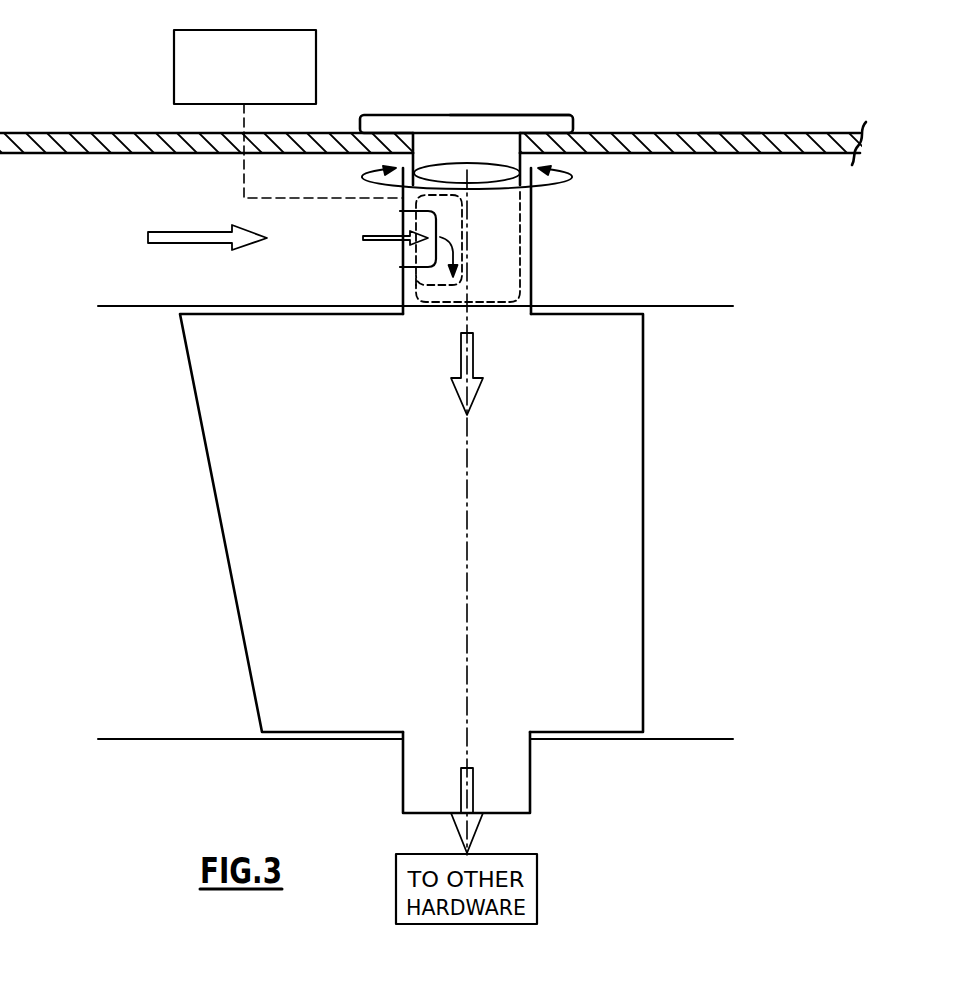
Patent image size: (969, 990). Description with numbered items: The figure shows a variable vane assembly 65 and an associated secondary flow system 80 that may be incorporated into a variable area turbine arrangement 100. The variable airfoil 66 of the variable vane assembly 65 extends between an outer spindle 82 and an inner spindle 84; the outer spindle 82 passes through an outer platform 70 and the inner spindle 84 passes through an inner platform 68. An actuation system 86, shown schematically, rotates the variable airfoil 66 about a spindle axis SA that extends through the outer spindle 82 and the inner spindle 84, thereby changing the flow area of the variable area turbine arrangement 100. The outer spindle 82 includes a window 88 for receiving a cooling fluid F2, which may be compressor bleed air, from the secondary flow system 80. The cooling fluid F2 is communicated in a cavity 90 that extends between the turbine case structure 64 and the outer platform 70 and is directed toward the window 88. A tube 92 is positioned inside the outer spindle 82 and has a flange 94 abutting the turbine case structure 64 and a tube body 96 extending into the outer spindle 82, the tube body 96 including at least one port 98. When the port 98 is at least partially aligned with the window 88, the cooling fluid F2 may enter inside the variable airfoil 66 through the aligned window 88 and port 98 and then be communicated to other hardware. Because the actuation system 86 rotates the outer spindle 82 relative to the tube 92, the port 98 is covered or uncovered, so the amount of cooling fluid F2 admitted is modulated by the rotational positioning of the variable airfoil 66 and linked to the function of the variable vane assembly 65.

The turbine case structure 64 is at (813, 145).
The variable vane assembly 65 is at (729, 124).
The variable airfoil 66 is at (643, 485).
The inner platform 68 is at (162, 739).
The outer platform 70 is at (135, 306).
The secondary flow system 80 is at (349, 170).
The outer spindle 82 is at (544, 237).
The inner spindle 84 is at (544, 782).
The actuation system 86 is at (174, 68).
The window 88 is at (405, 258).
The cavity 90 is at (148, 198).
The tube 92 is at (407, 115).
The flange 94 is at (565, 126).
The tube body 96 is at (558, 168).
The port 98 is at (447, 218).
The variable area turbine arrangement 100 is at (522, 73).
The spindle axis SA is at (467, 550).
The cooling fluid F2 is at (193, 244).